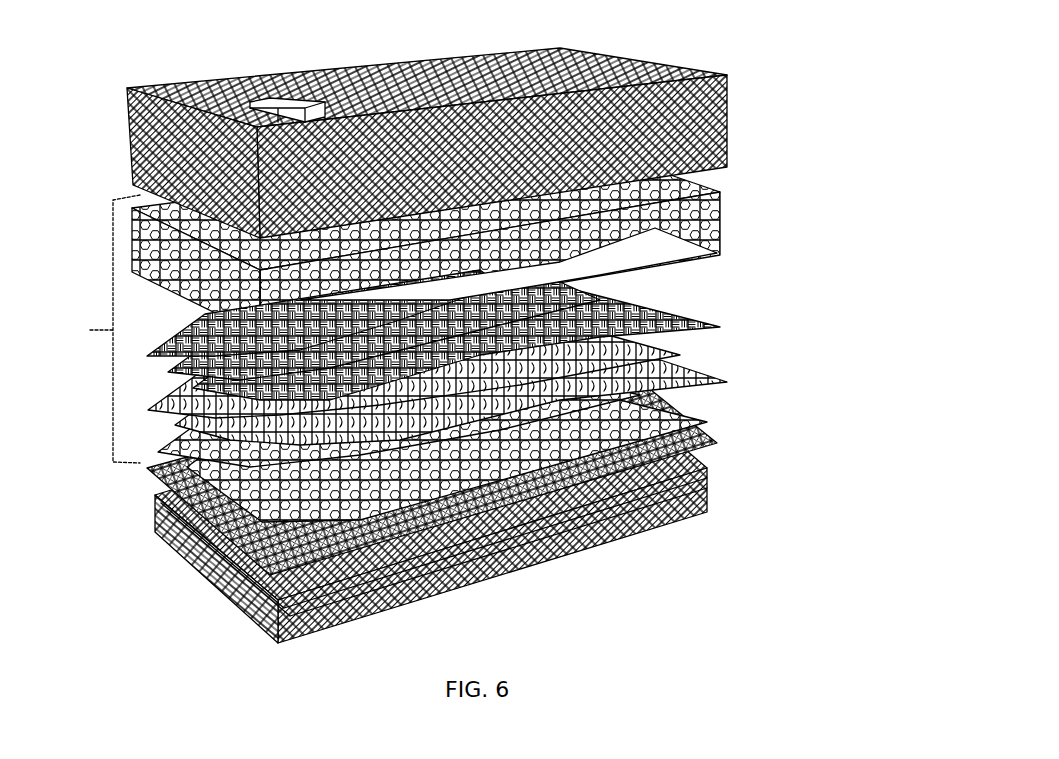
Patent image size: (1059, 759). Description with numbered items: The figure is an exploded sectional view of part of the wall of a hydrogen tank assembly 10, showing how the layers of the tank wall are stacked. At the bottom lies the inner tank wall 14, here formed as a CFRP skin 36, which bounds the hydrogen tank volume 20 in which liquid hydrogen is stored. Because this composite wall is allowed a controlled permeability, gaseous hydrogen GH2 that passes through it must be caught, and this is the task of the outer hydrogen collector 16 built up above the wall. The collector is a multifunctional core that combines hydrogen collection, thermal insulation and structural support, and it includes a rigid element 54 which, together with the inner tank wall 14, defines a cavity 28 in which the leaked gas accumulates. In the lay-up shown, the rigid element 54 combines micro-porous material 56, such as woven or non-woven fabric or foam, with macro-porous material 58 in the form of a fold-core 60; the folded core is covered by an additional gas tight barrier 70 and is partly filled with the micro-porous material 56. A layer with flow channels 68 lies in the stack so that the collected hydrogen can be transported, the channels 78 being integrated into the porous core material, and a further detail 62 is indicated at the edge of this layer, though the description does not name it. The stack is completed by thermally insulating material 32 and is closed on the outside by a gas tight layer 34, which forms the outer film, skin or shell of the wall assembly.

The hydrogen tank assembly 10 is at (620, 607).
The inner tank wall 14 is at (433, 460).
The outer hydrogen collector 16 is at (95, 329).
The hydrogen tank volume 20 is at (226, 613).
The cavity 28 is at (598, 547).
The thermally insulating material 32 is at (683, 70).
The gas tight layer 34 is at (175, 335).
The CFRP skin 36 is at (157, 493).
The rigid element 54 is at (190, 452).
The micro-porous material 56 is at (688, 414).
The macro-porous material 58 is at (653, 555).
The fold-core 60 is at (688, 372).
The notch / opening 62 is at (373, 503).
The layer with flow channels 68 is at (315, 515).
The gas tight barrier 70 is at (703, 322).
The channel 78 is at (425, 505).
The gaseous hydrogen GH2 is at (503, 577).